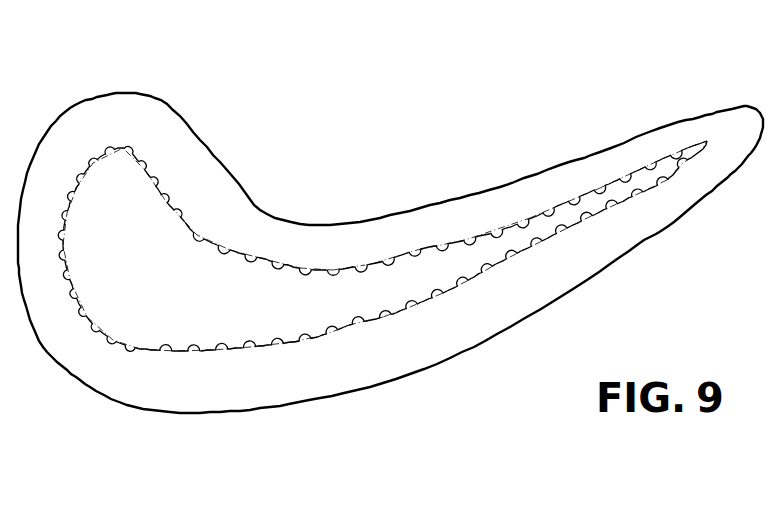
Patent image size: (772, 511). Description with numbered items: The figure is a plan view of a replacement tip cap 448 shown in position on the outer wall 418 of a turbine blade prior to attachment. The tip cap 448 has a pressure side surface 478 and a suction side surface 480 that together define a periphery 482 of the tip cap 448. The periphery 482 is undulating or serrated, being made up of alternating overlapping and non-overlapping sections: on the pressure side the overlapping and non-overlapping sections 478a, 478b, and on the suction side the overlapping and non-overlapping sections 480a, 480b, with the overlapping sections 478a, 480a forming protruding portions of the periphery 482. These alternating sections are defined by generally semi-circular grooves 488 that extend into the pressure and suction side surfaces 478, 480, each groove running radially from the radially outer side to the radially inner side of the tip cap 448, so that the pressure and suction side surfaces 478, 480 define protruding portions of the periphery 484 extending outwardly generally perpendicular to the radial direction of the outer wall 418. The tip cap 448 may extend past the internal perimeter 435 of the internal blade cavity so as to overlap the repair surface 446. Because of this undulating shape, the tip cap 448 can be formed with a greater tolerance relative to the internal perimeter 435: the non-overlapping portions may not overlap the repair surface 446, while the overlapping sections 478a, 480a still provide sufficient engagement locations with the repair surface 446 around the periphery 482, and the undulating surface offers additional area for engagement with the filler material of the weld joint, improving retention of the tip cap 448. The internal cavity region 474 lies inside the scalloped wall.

The outer wall 418 is at (132, 94).
The grooves 488 is at (160, 204).
The periphery 484 is at (197, 237).
The pressure side overlapping section 478a is at (347, 262).
The pressure side non-overlapping section 478b is at (393, 264).
The periphery 482 is at (507, 226).
The pressure side surface 478 is at (565, 201).
The cooling cavity 474 is at (497, 243).
The tip cap 448 is at (693, 142).
The suction side surface 480 is at (480, 277).
The suction side overlapping section 480a is at (308, 347).
The suction side non-overlapping section 480b is at (355, 326).
The internal perimeter 435 is at (212, 349).
The repair surface 446 is at (101, 378).